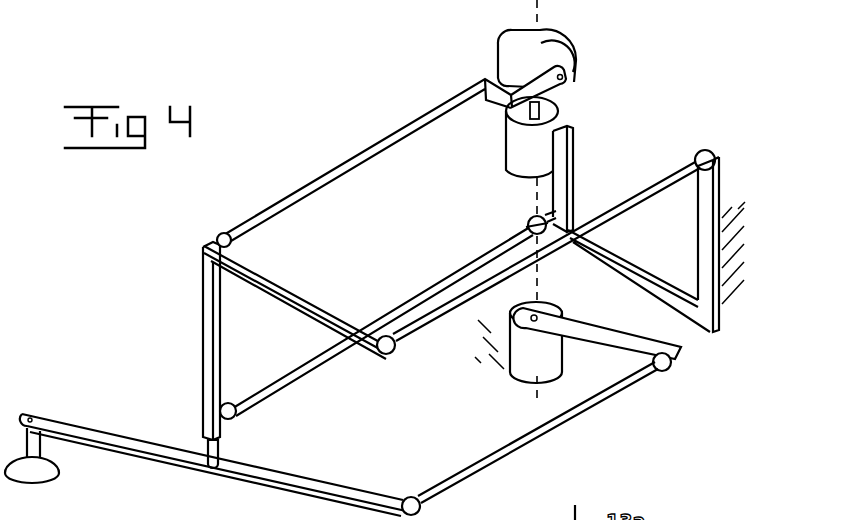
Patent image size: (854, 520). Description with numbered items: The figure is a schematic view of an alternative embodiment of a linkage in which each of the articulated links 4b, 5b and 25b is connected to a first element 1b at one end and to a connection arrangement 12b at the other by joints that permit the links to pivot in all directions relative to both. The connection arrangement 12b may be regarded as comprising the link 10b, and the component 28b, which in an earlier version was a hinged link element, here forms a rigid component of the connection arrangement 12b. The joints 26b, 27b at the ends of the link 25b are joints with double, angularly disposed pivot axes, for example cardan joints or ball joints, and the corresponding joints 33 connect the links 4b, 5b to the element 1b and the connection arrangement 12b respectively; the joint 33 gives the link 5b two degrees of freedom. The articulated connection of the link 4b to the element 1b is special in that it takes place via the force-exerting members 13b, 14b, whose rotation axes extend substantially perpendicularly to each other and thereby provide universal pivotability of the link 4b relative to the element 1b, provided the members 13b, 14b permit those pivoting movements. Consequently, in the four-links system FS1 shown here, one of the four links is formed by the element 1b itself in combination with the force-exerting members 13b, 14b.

The four-links system FS1 is at (383, 80).
The first element 1b is at (708, 242).
The articulated link 4b is at (338, 171).
The articulated link 5b is at (452, 279).
The link 10b is at (210, 310).
The connection arrangement 12b is at (180, 388).
The force-exerting member 13b is at (538, 50).
The force-exerting member 14b is at (522, 149).
The articulated link 25b is at (450, 312).
The joint 26b is at (702, 152).
The joint 27b is at (390, 355).
The rigid component 28b is at (293, 299).
The joints 33 is at (220, 233).